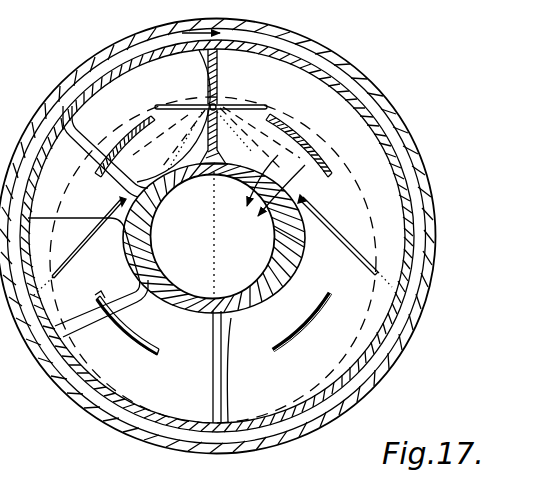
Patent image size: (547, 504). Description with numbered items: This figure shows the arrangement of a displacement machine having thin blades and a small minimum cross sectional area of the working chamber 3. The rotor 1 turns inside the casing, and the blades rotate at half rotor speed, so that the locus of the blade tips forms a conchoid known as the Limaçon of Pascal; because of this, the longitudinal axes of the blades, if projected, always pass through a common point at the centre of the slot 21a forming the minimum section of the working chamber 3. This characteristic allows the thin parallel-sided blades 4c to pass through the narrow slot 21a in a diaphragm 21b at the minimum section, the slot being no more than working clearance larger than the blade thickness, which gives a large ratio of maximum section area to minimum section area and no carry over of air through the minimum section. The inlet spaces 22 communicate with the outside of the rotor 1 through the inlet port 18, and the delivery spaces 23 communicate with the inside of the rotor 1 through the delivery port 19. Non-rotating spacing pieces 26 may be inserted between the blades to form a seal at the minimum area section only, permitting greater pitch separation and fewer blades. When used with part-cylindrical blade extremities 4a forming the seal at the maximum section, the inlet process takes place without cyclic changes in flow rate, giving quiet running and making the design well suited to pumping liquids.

The rotor 1 is at (244, 350).
The working chamber 3 is at (178, 397).
The part-cylindrical blade extremities 4a is at (306, 199).
The thin parallel-sided blades 4c is at (343, 232).
The inlet port 18 is at (171, 92).
The delivery port 19 is at (285, 227).
The slot forming the minimum section 21a is at (216, 98).
The diaphragm 21b is at (222, 103).
The inlet spaces 22 is at (102, 209).
The delivery spaces 23 is at (330, 274).
The non-rotating spacing pieces 26 is at (142, 334).